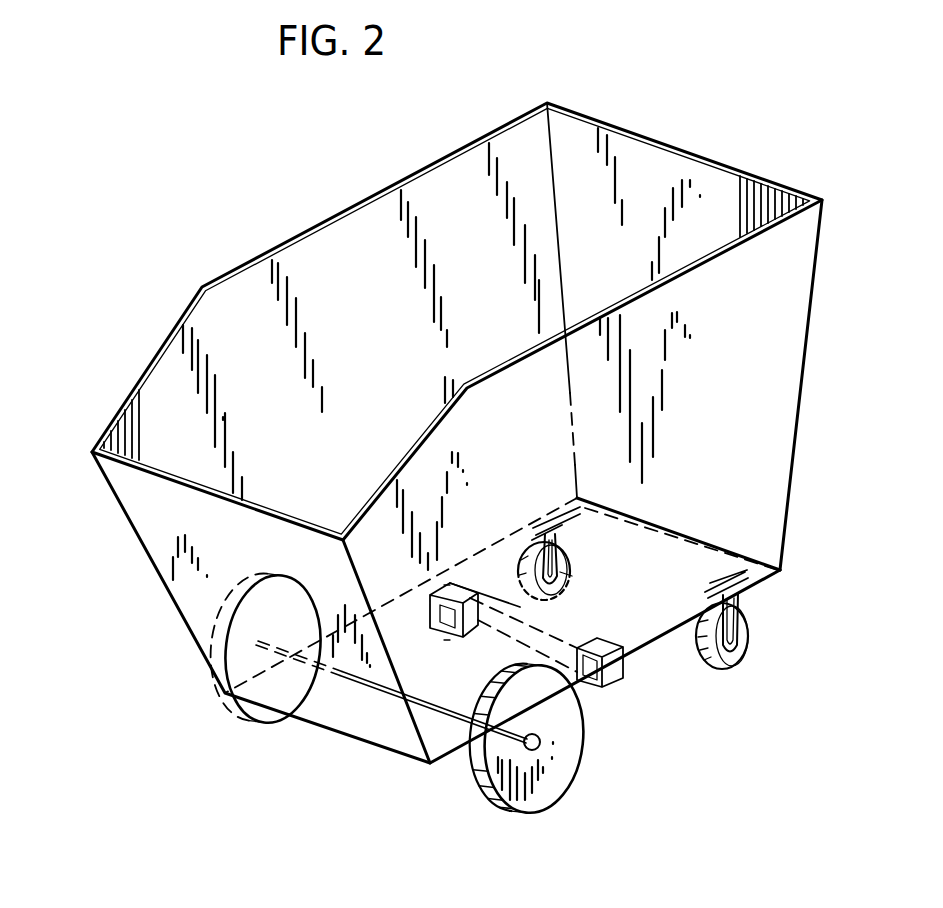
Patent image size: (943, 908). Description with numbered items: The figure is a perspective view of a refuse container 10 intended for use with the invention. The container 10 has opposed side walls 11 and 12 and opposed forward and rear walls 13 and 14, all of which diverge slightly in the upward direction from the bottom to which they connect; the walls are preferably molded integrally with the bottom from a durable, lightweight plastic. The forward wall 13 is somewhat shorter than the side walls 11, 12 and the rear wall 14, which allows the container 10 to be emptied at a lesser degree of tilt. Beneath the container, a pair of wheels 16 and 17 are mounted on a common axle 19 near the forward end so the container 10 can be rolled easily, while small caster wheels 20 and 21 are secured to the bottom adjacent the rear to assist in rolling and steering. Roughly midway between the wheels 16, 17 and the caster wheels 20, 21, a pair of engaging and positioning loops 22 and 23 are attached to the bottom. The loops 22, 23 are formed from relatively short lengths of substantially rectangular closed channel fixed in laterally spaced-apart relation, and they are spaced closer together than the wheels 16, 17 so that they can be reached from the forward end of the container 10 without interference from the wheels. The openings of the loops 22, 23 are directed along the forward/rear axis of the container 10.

The container 10 is at (182, 237).
The side wall 11 is at (775, 322).
The side wall 12 is at (372, 231).
The forward wall 13 is at (140, 508).
The rear wall 14 is at (672, 180).
The wheel 16 is at (543, 783).
The wheel 17 is at (232, 706).
The axle 19 is at (345, 677).
The caster wheel 20 is at (737, 667).
The caster wheel 21 is at (570, 577).
The engaging and positioning loop 22 is at (594, 688).
The engaging and positioning loop 23 is at (447, 593).